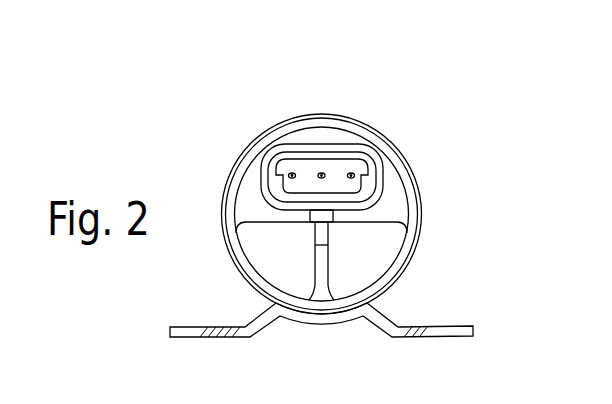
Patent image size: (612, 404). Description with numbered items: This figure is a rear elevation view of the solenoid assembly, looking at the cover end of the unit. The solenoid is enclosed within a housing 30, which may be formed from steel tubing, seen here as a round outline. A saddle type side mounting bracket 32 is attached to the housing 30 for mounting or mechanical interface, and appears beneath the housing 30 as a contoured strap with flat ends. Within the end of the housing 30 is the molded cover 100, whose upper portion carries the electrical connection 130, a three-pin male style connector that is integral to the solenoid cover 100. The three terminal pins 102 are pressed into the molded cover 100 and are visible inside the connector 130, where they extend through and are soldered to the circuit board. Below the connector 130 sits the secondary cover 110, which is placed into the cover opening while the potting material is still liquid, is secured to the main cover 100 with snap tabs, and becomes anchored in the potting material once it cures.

The housing 30 is at (222, 202).
The saddle type side mounting bracket 32 is at (427, 337).
The cover 100 is at (390, 197).
The terminal pins 102 is at (322, 172).
The secondary cover 110 is at (370, 245).
The electrical connection 130 is at (342, 167).